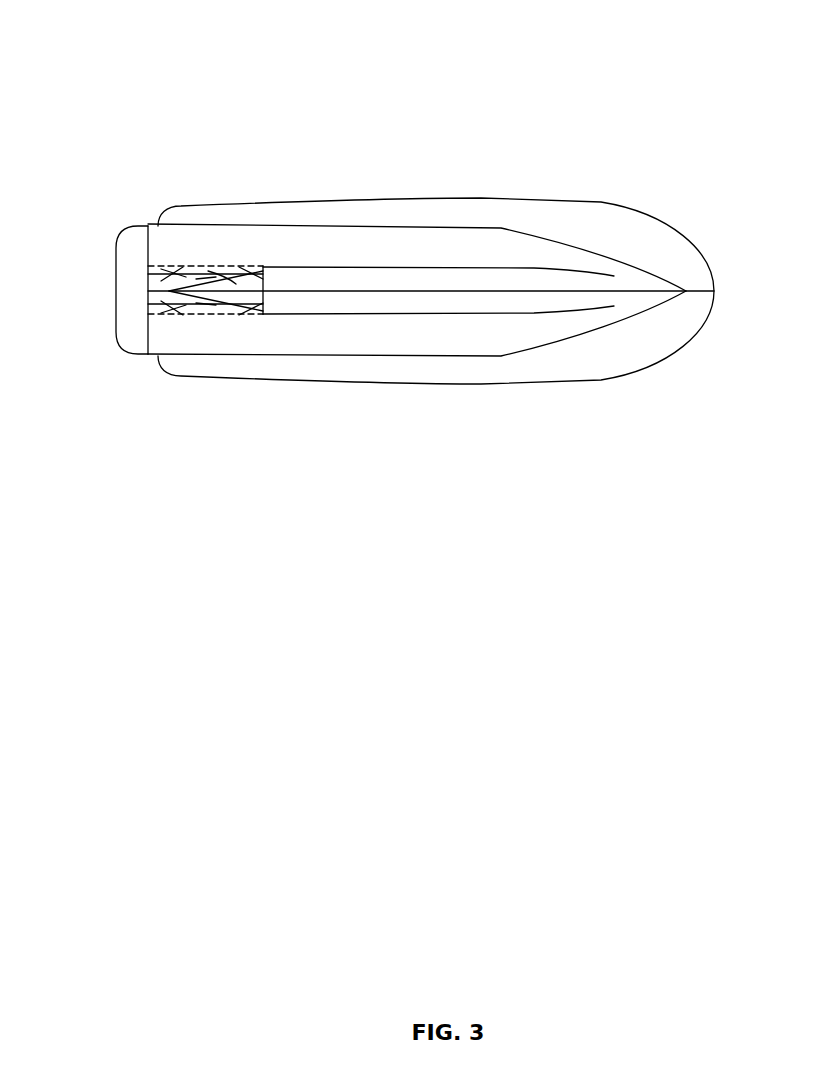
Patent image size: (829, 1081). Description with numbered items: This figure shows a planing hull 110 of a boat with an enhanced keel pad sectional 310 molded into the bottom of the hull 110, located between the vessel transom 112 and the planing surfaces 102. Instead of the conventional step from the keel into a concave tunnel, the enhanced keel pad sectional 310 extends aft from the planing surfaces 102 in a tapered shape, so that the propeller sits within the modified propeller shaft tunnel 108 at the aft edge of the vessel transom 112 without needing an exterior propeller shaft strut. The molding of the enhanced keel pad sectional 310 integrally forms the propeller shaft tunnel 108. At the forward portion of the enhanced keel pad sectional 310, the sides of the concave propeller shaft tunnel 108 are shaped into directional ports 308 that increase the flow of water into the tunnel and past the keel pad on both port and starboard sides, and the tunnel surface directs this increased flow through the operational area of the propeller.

The planing surfaces 102 is at (437, 280).
The propeller shaft tunnel 108 is at (161, 283).
The hull 110 is at (672, 222).
The vessel transom 112 is at (147, 337).
The directional ports 308 is at (194, 308).
The enhanced keel pad sectional 310 is at (233, 310).